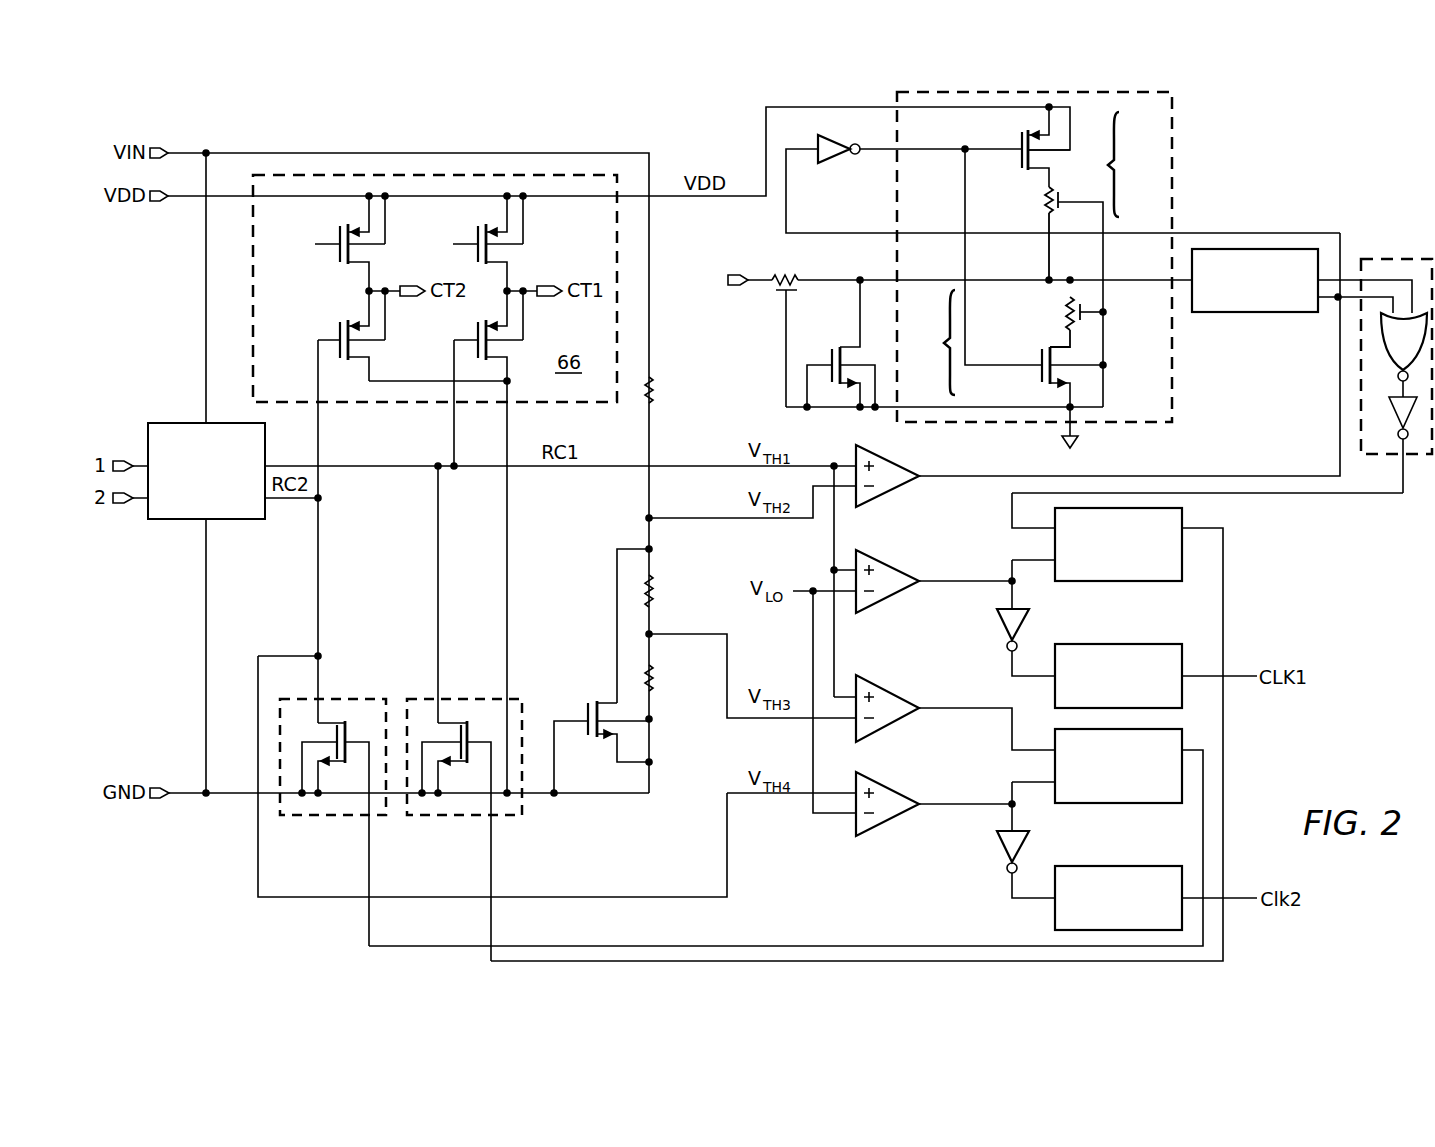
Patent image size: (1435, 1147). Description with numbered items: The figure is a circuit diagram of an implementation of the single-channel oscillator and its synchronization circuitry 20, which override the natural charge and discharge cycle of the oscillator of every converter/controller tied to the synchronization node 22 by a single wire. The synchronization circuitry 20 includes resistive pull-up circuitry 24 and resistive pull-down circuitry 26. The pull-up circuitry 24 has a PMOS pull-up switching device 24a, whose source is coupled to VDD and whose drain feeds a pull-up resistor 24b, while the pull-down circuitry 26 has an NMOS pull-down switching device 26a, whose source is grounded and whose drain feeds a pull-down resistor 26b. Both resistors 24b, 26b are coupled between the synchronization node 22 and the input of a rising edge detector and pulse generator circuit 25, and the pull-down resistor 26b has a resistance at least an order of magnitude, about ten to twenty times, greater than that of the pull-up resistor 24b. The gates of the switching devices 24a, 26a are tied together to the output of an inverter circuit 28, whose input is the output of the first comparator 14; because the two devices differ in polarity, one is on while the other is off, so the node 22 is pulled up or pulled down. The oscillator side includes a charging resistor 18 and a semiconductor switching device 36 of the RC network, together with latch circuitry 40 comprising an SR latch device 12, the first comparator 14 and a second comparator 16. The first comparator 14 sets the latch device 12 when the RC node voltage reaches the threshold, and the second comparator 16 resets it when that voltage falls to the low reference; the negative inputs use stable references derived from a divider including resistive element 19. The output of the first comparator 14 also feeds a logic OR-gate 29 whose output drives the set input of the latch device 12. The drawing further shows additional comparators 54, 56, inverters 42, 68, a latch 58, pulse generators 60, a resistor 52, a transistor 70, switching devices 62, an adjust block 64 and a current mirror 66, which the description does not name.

The latch device 12 is at (1096, 583).
The first comparator 14 is at (887, 496).
The second comparator 16 is at (887, 602).
The charging resistor 18 is at (656, 591).
The resistive element 19 is at (656, 393).
The synchronization circuitry 20 is at (1175, 197).
The synchronization node 22 is at (742, 290).
The resistive pull-up circuitry 24 is at (1132, 164).
The pull-up switching device 24a is at (1020, 141).
The pull-up resistor 24b is at (1043, 200).
The rising edge detector and pulse generator circuit 25 is at (1257, 313).
The resistive pull-down circuitry 26 is at (935, 342).
The pull-down switching device 26a is at (1040, 372).
The pull-down resistor 26b is at (1062, 310).
The inverter circuit 28 is at (836, 162).
The logic OR-gate 29 is at (1404, 259).
The semiconductor switching device 36 is at (323, 818).
The latch circuitry 40 is at (1138, 643).
The inverter 42 is at (1000, 620).
The resistor 52 is at (656, 686).
The comparator 54 is at (887, 730).
The comparator 56 is at (887, 826).
The flip-flop 58 is at (1096, 805).
The pulse generator 60 is at (1138, 865).
The switch transistor 62 is at (453, 818).
The current adjust block 64 is at (189, 521).
The current mirror 66 is at (435, 288).
The inverter 68 is at (1000, 844).
The transistor 70 is at (586, 711).